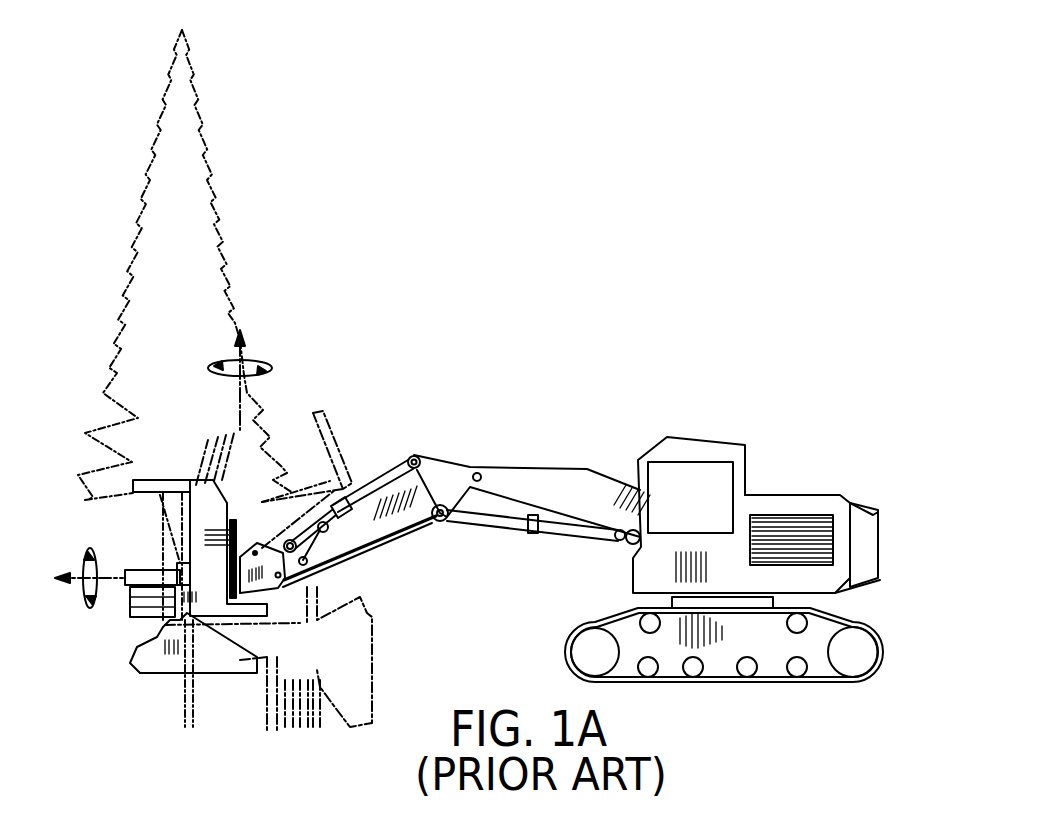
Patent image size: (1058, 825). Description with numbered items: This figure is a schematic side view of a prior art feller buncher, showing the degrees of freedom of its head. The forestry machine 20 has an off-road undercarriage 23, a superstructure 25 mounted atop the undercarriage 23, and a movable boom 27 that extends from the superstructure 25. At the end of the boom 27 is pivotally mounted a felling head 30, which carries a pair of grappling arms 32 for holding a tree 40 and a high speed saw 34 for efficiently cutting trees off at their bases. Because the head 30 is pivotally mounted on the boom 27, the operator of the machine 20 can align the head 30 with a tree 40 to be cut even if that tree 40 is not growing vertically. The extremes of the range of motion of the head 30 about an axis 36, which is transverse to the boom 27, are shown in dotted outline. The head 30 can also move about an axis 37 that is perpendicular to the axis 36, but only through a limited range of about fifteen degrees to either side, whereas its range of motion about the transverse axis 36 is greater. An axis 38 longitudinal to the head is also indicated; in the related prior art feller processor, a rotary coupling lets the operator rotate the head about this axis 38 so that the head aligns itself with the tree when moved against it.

The forestry machine 20 is at (702, 428).
The off-road undercarriage 23 is at (612, 620).
The superstructure 25 is at (779, 485).
The movable boom 27 is at (418, 445).
The felling head 30 is at (212, 598).
The grappling arms 32 is at (137, 613).
The high speed saw 34 is at (156, 682).
The axis 36 is at (297, 625).
The axis 37 is at (57, 568).
The axis 38 is at (248, 384).
The tree 40 is at (213, 180).